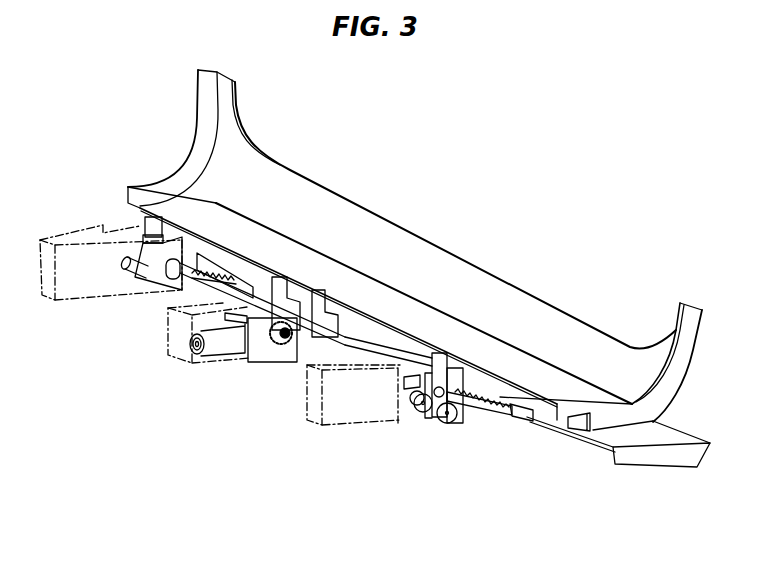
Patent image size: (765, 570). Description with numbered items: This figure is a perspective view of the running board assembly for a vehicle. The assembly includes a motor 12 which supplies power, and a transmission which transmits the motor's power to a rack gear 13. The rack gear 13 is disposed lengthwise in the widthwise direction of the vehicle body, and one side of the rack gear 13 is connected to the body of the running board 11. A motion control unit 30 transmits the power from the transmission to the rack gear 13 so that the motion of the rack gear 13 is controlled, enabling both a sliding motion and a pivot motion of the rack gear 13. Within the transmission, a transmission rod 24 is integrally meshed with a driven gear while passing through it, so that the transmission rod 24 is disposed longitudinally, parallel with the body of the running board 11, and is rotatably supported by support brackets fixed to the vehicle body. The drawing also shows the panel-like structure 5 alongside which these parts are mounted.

The spoiler panel 5 is at (407, 260).
The running board 11 is at (677, 455).
The motor 12 is at (213, 347).
The rack gear 13 is at (228, 276).
The transmission rod 24 is at (343, 348).
The motion control unit 30 is at (128, 274).